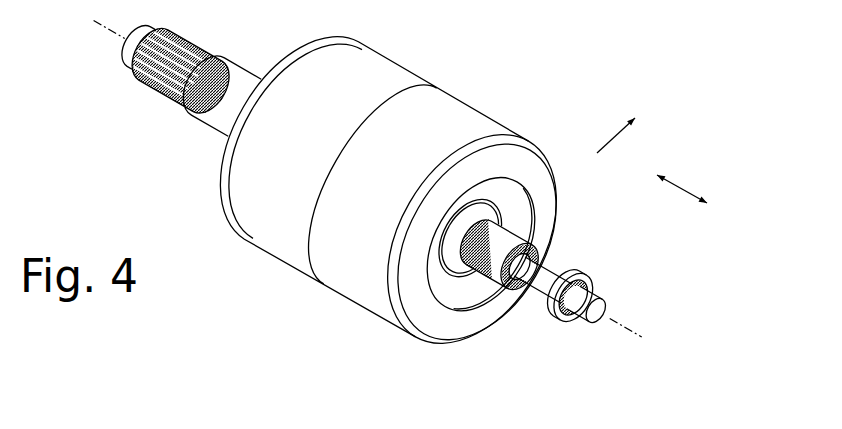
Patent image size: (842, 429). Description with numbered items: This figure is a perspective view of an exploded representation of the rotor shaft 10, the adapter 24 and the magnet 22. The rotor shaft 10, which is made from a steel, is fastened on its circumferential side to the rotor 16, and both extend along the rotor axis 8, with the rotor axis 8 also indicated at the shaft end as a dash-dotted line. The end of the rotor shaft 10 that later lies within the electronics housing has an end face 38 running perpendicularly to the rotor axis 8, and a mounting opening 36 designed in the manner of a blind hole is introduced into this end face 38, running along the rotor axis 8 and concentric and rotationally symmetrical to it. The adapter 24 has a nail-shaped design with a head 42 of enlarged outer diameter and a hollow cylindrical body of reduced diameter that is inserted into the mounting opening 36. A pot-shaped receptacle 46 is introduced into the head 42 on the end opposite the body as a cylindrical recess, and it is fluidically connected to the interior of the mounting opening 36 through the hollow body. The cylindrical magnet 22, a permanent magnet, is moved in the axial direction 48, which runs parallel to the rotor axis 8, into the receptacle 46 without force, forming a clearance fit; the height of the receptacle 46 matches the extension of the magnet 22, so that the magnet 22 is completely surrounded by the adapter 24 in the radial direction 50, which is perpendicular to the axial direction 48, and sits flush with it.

The rotor axis 8 is at (637, 336).
The rotor shaft 10 is at (200, 123).
The rotor 16 is at (455, 120).
The magnet 22 is at (598, 323).
The adapter 24 is at (577, 275).
The mounting opening 36 is at (527, 266).
The end face 38 is at (520, 291).
The head 42 is at (558, 316).
The receptacle 46 is at (590, 287).
The axial direction 48 is at (683, 188).
The radial direction 50 is at (597, 153).